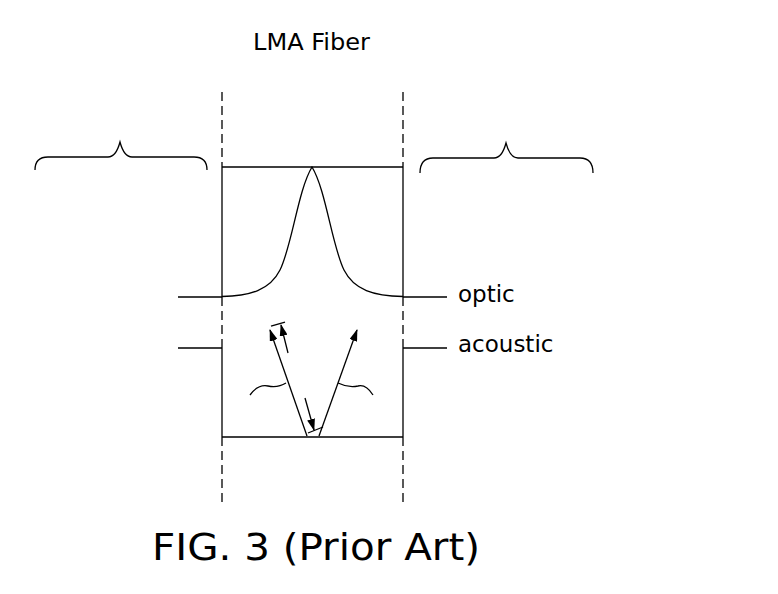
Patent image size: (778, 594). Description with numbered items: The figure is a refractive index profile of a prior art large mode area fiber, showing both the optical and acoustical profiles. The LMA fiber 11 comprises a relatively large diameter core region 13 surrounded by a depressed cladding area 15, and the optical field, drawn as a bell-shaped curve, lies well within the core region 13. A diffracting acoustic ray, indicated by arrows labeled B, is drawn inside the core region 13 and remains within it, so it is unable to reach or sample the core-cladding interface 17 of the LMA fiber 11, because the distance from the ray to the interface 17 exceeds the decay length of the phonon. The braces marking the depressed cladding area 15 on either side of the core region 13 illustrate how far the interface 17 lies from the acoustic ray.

The LMA fiber 11 is at (425, 60).
The core region 13 is at (403, 119).
The depressed cladding area 15 is at (314, 142).
The core-cladding interface 17 is at (222, 393).